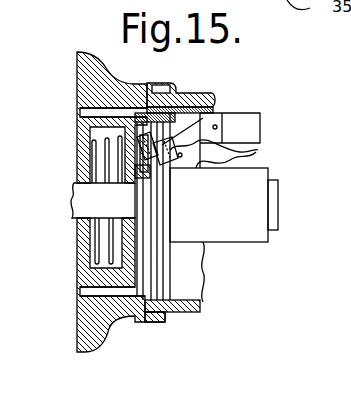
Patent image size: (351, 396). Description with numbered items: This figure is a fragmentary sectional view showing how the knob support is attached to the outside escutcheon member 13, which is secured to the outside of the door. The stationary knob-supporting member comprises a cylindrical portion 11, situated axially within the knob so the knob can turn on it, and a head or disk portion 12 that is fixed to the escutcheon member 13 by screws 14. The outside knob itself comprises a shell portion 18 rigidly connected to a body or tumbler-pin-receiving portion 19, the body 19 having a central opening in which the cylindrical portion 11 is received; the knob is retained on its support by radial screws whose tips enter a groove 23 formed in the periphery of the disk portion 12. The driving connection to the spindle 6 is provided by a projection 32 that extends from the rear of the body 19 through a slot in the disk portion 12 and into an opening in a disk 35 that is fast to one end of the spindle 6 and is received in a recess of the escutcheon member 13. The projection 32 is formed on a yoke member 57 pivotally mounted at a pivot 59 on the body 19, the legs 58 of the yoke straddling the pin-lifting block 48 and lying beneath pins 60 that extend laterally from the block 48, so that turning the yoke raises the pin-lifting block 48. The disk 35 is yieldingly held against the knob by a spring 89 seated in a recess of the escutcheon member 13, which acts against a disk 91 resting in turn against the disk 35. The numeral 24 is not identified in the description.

The spindle 6 is at (72, 187).
The cylindrical portion 11 is at (256, 228).
The disk portion 12 is at (197, 281).
The escutcheon member 13 is at (88, 65).
The screws 14 is at (113, 113).
The shell portion 18 is at (193, 318).
The body portion 19 is at (258, 150).
The groove 23 is at (165, 322).
The boss 24 is at (278, 189).
The projection 32 is at (168, 125).
The disk 35 is at (147, 322).
The pin-lifting block 48 is at (217, 126).
The yoke member 57 is at (162, 170).
The legs 58 is at (212, 160).
The pivot 59 is at (182, 162).
The pins 60 is at (215, 125).
The spring 89 is at (98, 157).
The disk 91 is at (98, 266).